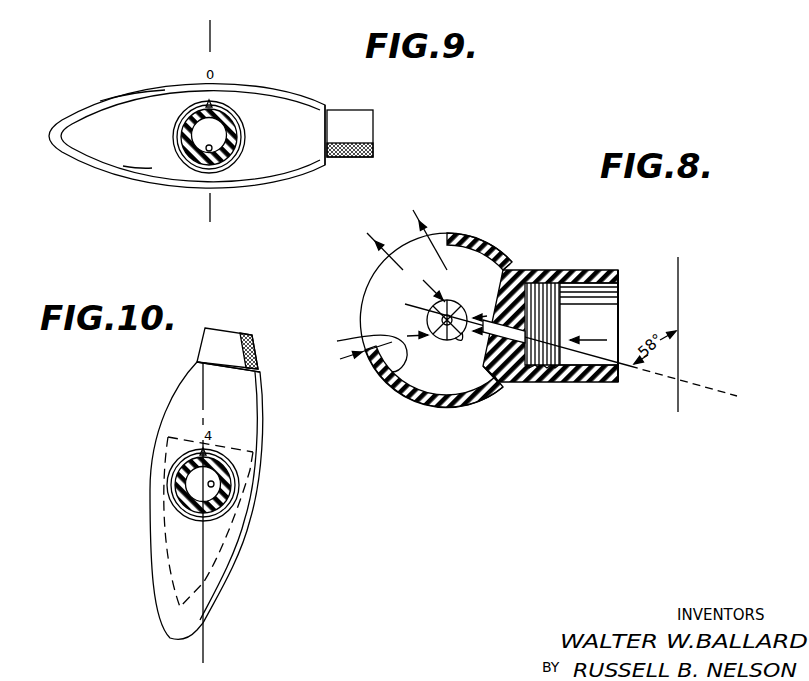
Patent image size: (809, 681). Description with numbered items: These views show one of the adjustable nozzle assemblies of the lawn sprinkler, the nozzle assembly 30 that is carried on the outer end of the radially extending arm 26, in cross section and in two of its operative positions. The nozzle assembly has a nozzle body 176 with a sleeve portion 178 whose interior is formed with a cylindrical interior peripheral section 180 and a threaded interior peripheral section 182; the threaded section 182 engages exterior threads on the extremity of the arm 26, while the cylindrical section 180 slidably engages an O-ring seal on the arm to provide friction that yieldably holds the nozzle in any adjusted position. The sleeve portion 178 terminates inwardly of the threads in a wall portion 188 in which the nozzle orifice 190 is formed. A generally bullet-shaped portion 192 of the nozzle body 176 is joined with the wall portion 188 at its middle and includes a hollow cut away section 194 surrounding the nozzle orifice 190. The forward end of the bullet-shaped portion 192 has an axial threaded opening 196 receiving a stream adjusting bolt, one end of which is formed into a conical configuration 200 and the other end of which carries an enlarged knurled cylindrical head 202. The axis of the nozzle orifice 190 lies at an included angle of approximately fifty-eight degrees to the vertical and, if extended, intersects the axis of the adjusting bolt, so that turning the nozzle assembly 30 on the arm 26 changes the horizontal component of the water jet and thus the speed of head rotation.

In FIG. 9, the arm 26 is at (226, 140).
In FIG. 10, the arm 26 is at (218, 503).
In FIG. 9, the nozzle assembly 30 is at (260, 80).
In FIG. 8, the nozzle assembly 30 is at (488, 237).
In FIG. 10, the nozzle assembly 30 is at (252, 494).
In FIG. 9, the nozzle body 176 is at (291, 191).
In FIG. 8, the nozzle body 176 is at (497, 252).
In FIG. 10, the nozzle body 176 is at (250, 410).
In FIG. 9, the sleeve portion 178 is at (230, 114).
In FIG. 8, the sleeve portion 178 is at (600, 270).
In FIG. 10, the sleeve portion 178 is at (228, 462).
In FIG. 8, the cylindrical interior peripheral section 180 is at (598, 382).
In FIG. 8, the threaded interior peripheral section 182 is at (528, 374).
In FIG. 8, the wall portion 188 is at (503, 300).
In FIG. 9, the nozzle orifice 190 is at (197, 133).
In FIG. 8, the nozzle orifice 190 is at (513, 382).
In FIG. 10, the nozzle orifice 190 is at (212, 484).
In FIG. 9, the bullet-shaped portion 192 is at (132, 104).
In FIG. 8, the bullet-shaped portion 192 is at (408, 393).
In FIG. 10, the bullet-shaped portion 192 is at (205, 585).
In FIG. 8, the hollow cut away section 194 is at (345, 341).
In FIG. 8, the threaded opening 196 is at (464, 338).
In FIG. 8, the conical end 200 is at (428, 304).
In FIG. 9, the cylindrical head 202 is at (365, 134).
In FIG. 10, the cylindrical head 202 is at (232, 345).